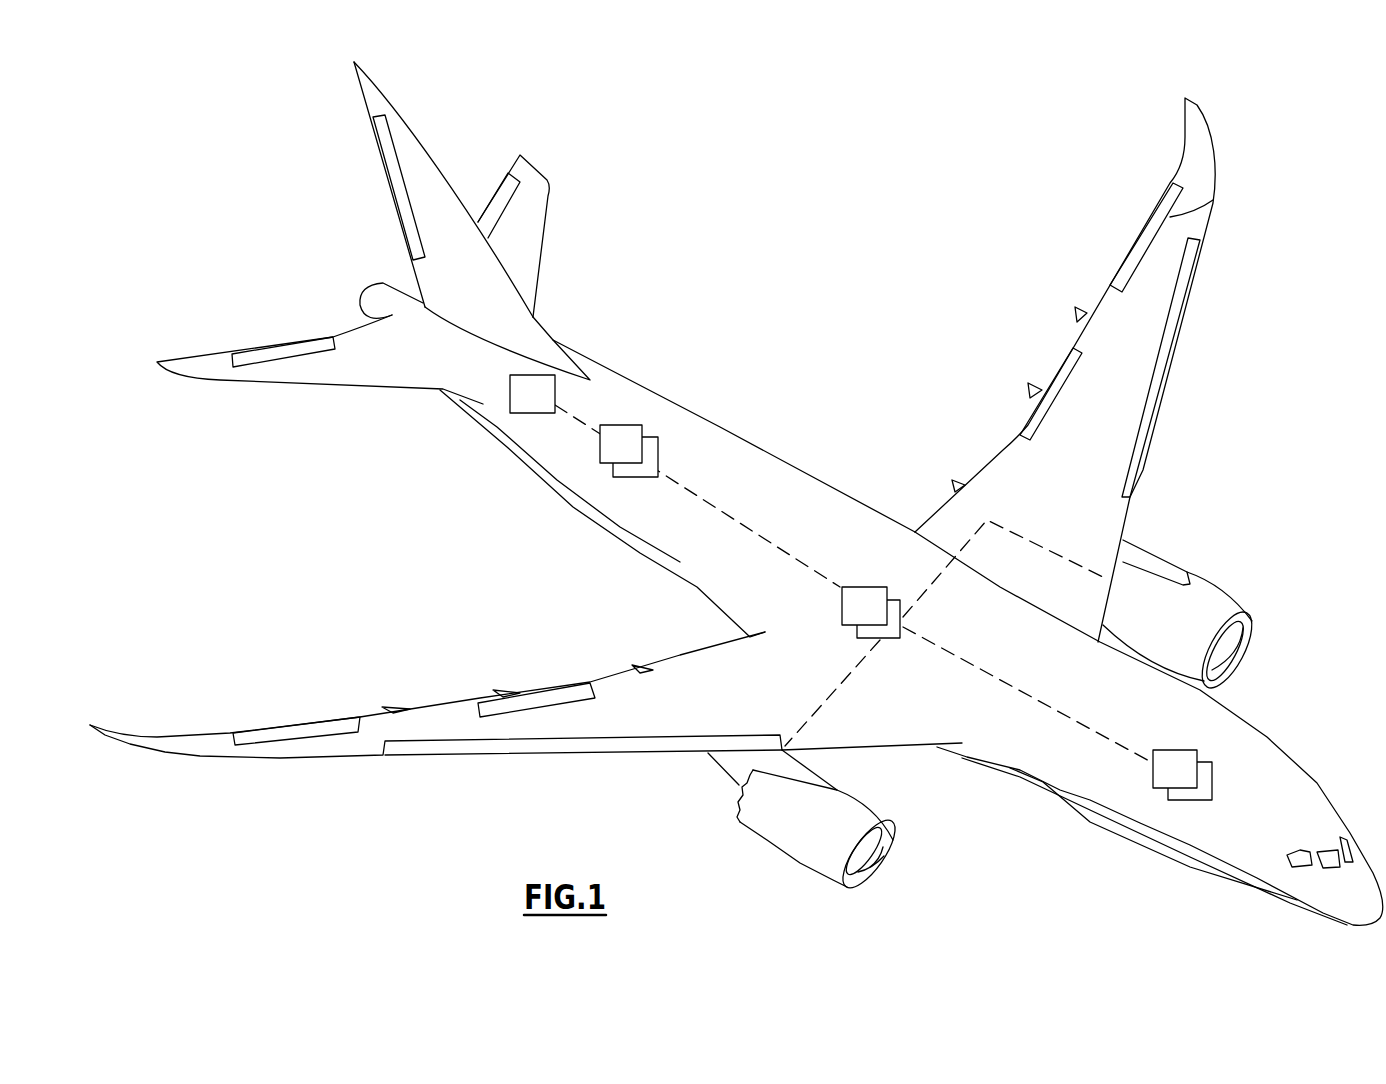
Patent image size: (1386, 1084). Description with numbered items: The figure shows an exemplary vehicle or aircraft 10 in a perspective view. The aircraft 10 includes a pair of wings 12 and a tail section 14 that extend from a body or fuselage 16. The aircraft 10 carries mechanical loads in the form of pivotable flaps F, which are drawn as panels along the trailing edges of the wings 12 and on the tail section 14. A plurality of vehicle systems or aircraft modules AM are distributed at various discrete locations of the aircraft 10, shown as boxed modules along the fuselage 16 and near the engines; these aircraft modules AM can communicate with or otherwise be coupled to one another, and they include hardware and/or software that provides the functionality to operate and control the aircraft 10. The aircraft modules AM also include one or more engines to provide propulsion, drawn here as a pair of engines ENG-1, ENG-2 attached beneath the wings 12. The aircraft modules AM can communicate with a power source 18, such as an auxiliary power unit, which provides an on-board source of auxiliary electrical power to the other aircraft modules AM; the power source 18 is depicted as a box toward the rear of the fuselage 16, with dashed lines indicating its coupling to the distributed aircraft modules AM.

The aircraft 10 is at (202, 105).
The wings 12 is at (337, 757).
The tail section 14 is at (468, 151).
The fuselage 16 is at (787, 465).
The power source 18 is at (526, 413).
The aircraft modules AM is at (643, 428).
The flaps F is at (383, 180).
The engine ENG-1 is at (842, 889).
The engine ENG-2 is at (1246, 606).